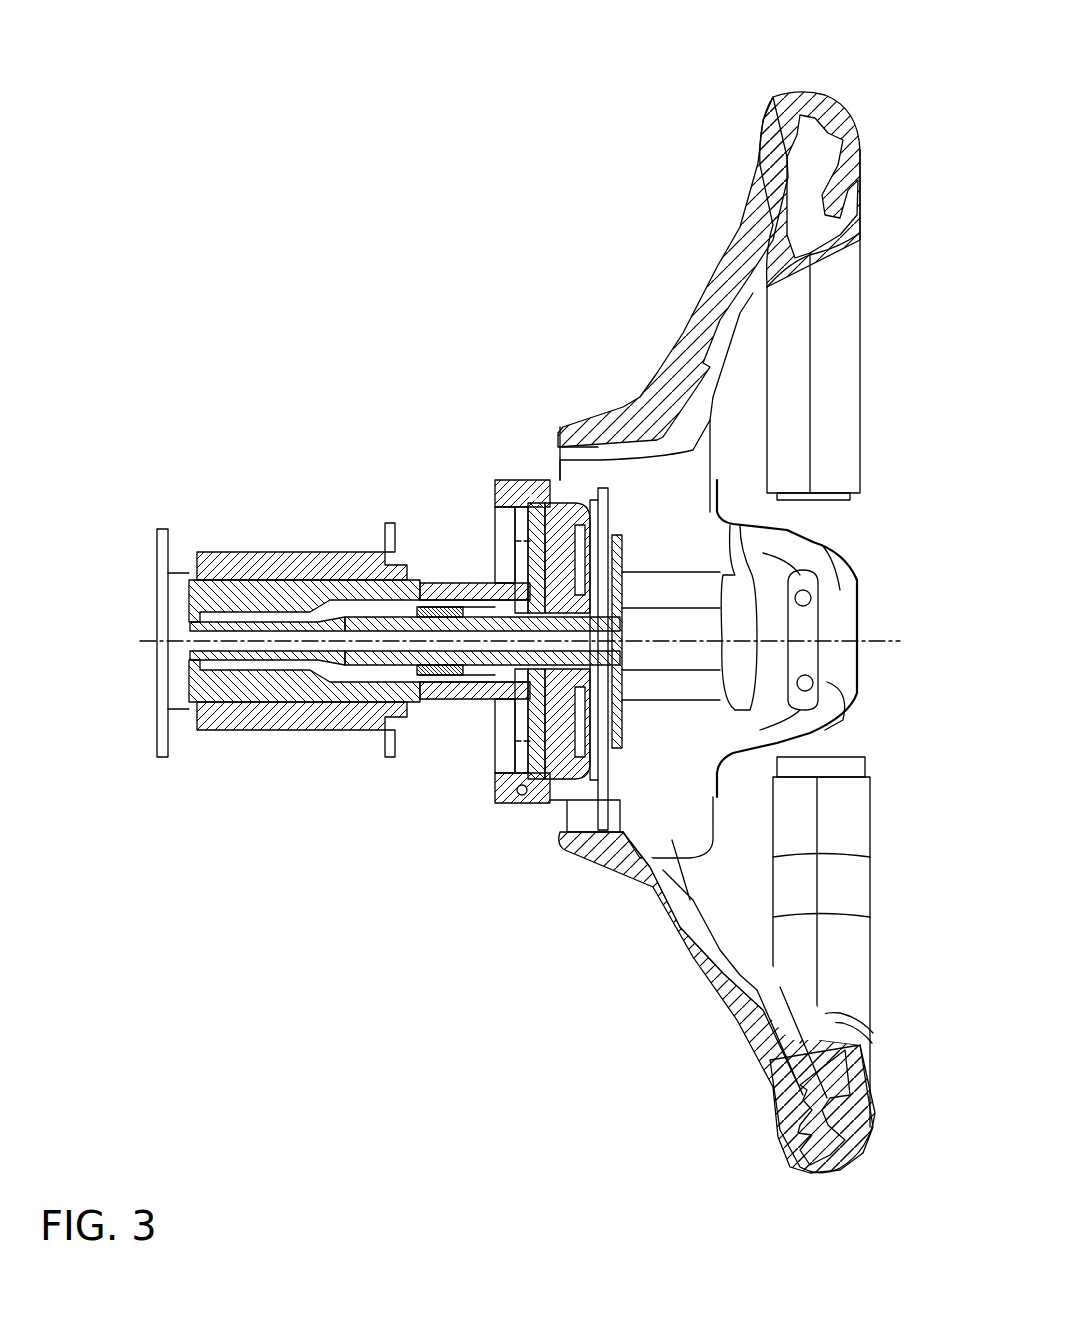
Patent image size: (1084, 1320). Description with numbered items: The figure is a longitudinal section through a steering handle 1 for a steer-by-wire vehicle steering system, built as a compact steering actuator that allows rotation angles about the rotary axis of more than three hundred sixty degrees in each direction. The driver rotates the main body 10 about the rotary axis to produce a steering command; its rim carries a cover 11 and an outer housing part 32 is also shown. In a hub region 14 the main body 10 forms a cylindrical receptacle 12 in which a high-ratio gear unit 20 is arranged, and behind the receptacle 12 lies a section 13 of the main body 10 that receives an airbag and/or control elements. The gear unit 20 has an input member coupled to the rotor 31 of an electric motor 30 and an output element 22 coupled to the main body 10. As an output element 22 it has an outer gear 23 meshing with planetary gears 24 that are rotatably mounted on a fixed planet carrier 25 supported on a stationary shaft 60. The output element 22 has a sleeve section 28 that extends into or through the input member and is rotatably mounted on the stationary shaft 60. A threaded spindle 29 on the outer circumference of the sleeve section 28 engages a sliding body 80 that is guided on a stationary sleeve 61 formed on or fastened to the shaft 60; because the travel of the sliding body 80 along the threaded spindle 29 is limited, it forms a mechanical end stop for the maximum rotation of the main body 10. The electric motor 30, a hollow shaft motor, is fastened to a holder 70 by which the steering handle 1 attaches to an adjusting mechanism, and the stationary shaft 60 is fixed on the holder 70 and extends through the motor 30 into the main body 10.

The steering handle 1 is at (906, 62).
The main body 10 is at (838, 357).
The rim cover 11 is at (860, 265).
The receptacle 12 is at (598, 847).
The section 13 is at (628, 628).
The hub region 14 is at (605, 775).
The gear unit 20 is at (502, 762).
The output element 22 is at (565, 515).
The outer gear 23 is at (500, 500).
The planetary gear 24 is at (520, 722).
The planet carrier 25 is at (535, 735).
The sleeve section 28 is at (523, 620).
The threaded spindle 29 is at (368, 618).
The electric motor 30 is at (270, 720).
The rotor 31 is at (260, 595).
The upper drive housing 32 is at (230, 560).
The stationary shaft 60 is at (417, 627).
The stationary sleeve 61 is at (470, 605).
The holder 70 is at (163, 718).
The sliding body 80 is at (438, 668).